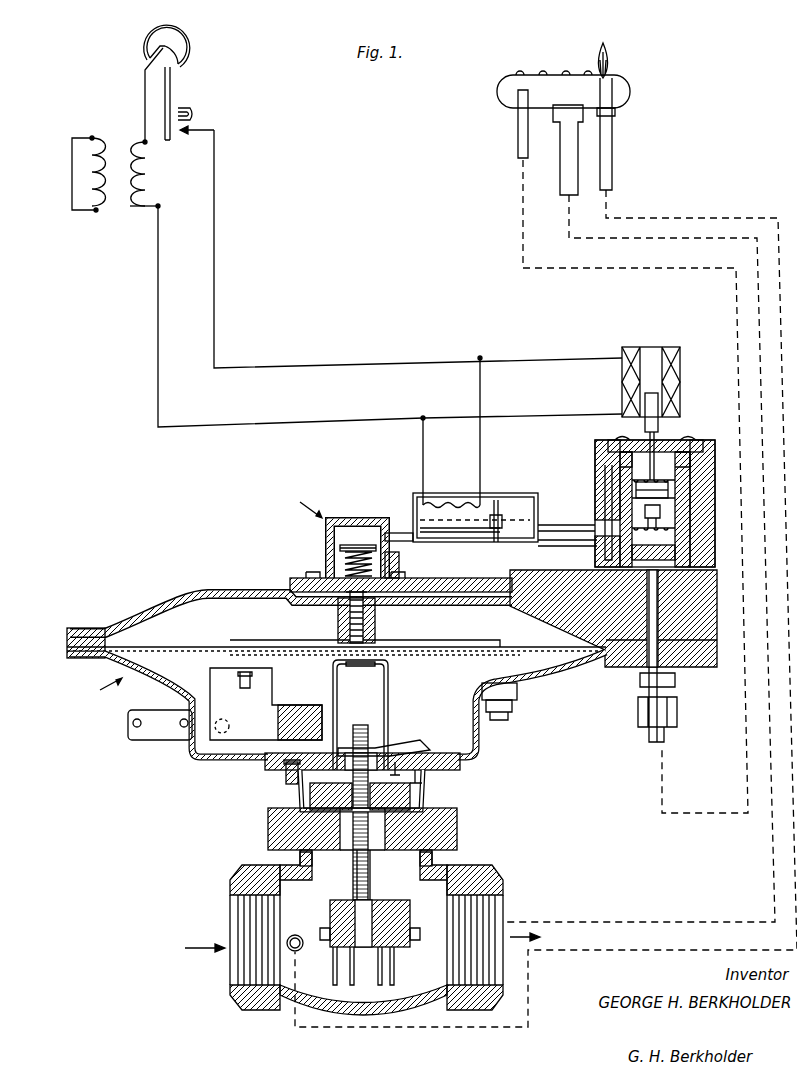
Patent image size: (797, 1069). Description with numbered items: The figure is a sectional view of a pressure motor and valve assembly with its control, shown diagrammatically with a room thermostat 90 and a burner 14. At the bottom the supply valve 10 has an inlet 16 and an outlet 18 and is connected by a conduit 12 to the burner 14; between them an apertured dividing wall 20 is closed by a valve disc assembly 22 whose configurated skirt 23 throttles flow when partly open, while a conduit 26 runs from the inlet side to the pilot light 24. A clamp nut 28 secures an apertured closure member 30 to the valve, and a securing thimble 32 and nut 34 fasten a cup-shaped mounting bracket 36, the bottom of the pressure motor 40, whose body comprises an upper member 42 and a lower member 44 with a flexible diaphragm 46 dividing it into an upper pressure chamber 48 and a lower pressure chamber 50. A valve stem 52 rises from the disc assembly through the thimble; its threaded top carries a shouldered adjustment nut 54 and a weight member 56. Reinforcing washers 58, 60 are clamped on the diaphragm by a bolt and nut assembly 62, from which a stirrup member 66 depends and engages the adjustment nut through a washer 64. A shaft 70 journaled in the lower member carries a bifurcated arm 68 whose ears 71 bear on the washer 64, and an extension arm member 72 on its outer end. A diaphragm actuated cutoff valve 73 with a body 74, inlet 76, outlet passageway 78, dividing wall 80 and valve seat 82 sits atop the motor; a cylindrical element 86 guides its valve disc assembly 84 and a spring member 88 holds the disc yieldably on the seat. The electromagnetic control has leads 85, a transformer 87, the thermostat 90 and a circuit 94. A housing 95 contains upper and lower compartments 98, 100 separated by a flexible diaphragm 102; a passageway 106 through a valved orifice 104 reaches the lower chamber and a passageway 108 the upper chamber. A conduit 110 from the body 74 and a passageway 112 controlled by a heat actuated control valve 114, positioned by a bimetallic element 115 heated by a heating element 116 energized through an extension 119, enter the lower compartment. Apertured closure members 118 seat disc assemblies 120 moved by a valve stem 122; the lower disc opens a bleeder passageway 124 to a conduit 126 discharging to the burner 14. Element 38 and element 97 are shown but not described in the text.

The supply valve 10 is at (260, 1005).
The conduit 12 is at (565, 185).
The burner 14 is at (624, 94).
The inlet 16 is at (232, 915).
The outlet 18 is at (500, 906).
The apertured dividing wall 20 is at (410, 904).
The valve disc assembly 22 is at (300, 935).
The configurated skirt 23 is at (396, 962).
The pilot light 24 is at (612, 60).
The conduit 26 is at (613, 158).
The clamp nut 28 is at (458, 828).
The apertured closure member 30 is at (430, 803).
The securing thimble 32 is at (356, 866).
The nut 34 is at (340, 850).
The cup-shaped mounting bracket 36 is at (299, 800).
The bolt 38 is at (290, 780).
The pressure motor 40 is at (102, 690).
The upper member 42 is at (150, 612).
The lower member 44 is at (160, 684).
The flexible diaphragm 46 is at (440, 650).
The upper pressure chamber 48 is at (462, 622).
The lower pressure chamber 50 is at (435, 711).
The valve stem 52 is at (372, 860).
The shouldered adjustment nut 54 is at (362, 732).
The weight member 56 is at (424, 790).
The reinforcing washer 58 is at (332, 654).
The reinforcing washer 60 is at (240, 645).
The screw threaded bolt and nut assembly 62 is at (358, 672).
The washer 64 is at (398, 752).
The stirrup member 66 is at (388, 702).
The bifurcated arm 68 is at (296, 705).
The shaft 70 is at (230, 726).
The ears 71 is at (396, 770).
The extension arm member 72 is at (165, 740).
The diaphragm actuated cutoff valve 73 is at (305, 502).
The body 74 is at (325, 535).
The inlet 76 is at (342, 606).
The outlet passageway 78 is at (392, 533).
The apertured dividing wall 80 is at (352, 535).
The valve seat 82 is at (392, 565).
The valve disc assembly 84 is at (334, 560).
The leads 85 is at (80, 208).
The cylindrical element 86 is at (338, 626).
The transformer 87 is at (128, 208).
The spring member 88 is at (377, 612).
The room thermostat 90 is at (184, 66).
The circuit 94 is at (290, 368).
The housing 95 is at (596, 452).
The solenoid coil 97 is at (670, 350).
The upper compartment 98 is at (690, 482).
The lower compartment 100 is at (680, 513).
The flexible diaphragm 102 is at (670, 490).
The valved orifice 104 is at (702, 446).
The passageway 106 is at (705, 560).
The passageway 108 is at (605, 508).
The conduit 110 is at (558, 540).
The passageway 112 is at (572, 531).
The heat actuated control valve 114 is at (524, 500).
The bimetallic element 115 is at (496, 525).
The heating element 116 is at (462, 493).
The apertured closure member 118 is at (597, 472).
The extension 119 is at (480, 448).
The disc assembly 120 is at (600, 490).
The valve stem 122 is at (662, 440).
The bleeder passageway 124 is at (700, 640).
The conduit 126 is at (517, 132).